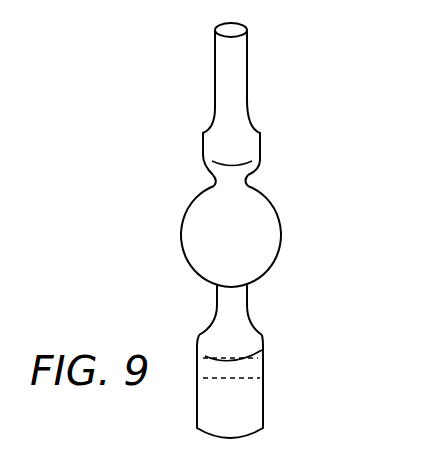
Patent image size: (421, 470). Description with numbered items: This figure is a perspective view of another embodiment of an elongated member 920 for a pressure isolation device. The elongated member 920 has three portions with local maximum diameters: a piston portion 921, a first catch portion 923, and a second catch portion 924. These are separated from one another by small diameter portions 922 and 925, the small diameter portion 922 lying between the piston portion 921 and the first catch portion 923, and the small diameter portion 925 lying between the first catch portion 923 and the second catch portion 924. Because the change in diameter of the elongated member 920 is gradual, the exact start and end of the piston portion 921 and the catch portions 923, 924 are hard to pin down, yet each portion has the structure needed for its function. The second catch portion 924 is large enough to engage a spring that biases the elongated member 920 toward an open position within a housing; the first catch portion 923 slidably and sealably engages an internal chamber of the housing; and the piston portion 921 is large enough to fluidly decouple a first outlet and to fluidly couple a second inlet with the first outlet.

The elongated member 920 is at (282, 87).
The piston portion 921 is at (253, 413).
The small diameter portion 922 is at (222, 308).
The first catch portion 923 is at (253, 202).
The second catch portion 924 is at (217, 127).
The small diameter portion 925 is at (220, 178).